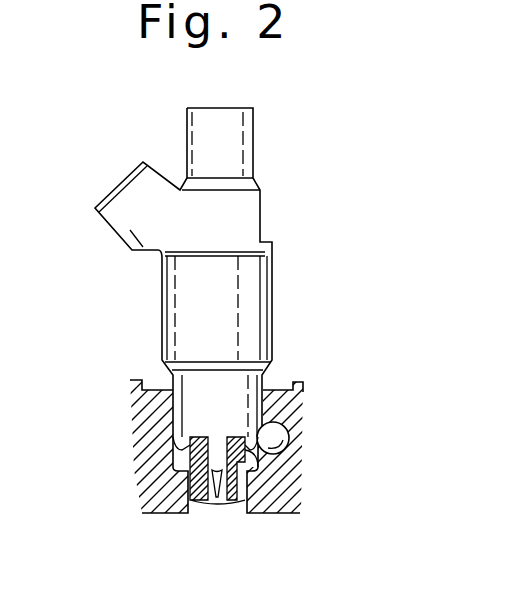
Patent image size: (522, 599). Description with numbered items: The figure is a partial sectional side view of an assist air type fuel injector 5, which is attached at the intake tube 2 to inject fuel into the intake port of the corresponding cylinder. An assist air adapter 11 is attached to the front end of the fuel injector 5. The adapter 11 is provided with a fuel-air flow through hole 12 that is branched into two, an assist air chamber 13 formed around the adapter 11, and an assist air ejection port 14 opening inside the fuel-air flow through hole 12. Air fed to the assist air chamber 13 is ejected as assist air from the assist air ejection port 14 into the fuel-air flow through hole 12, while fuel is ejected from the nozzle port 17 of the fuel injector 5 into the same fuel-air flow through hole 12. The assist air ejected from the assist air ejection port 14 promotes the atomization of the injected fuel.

The intake tube 2 is at (287, 403).
The fuel injector 5 is at (265, 220).
The assist air adapter 11 is at (195, 500).
The fuel-air flow through hole 12 is at (227, 500).
The assist air chamber 13 is at (257, 467).
The assist air ejection port 14 is at (190, 486).
The nozzle port 17 is at (173, 450).